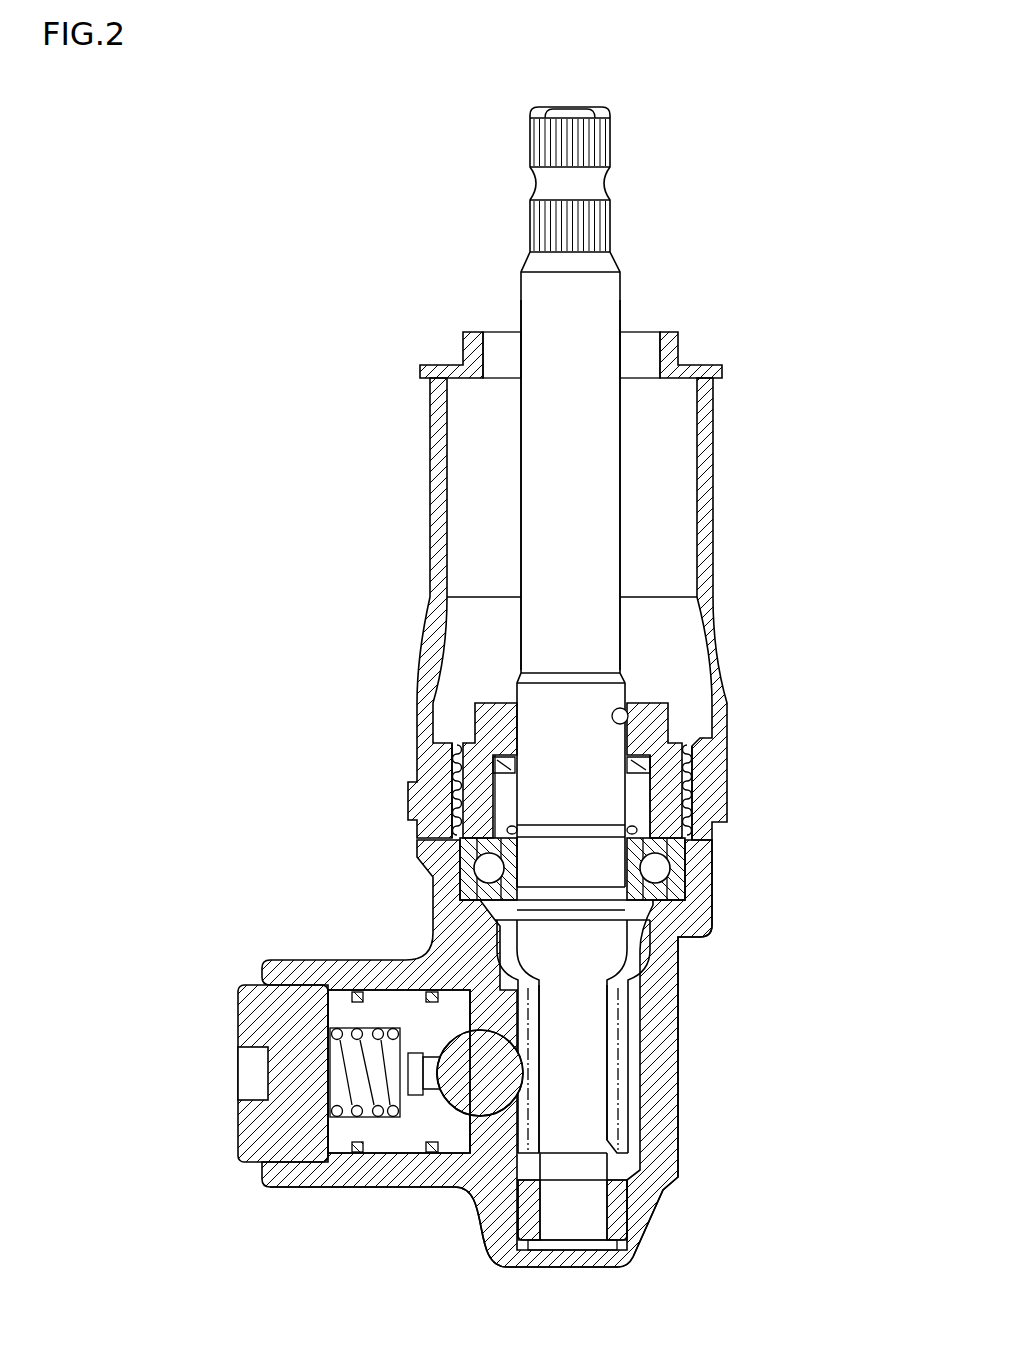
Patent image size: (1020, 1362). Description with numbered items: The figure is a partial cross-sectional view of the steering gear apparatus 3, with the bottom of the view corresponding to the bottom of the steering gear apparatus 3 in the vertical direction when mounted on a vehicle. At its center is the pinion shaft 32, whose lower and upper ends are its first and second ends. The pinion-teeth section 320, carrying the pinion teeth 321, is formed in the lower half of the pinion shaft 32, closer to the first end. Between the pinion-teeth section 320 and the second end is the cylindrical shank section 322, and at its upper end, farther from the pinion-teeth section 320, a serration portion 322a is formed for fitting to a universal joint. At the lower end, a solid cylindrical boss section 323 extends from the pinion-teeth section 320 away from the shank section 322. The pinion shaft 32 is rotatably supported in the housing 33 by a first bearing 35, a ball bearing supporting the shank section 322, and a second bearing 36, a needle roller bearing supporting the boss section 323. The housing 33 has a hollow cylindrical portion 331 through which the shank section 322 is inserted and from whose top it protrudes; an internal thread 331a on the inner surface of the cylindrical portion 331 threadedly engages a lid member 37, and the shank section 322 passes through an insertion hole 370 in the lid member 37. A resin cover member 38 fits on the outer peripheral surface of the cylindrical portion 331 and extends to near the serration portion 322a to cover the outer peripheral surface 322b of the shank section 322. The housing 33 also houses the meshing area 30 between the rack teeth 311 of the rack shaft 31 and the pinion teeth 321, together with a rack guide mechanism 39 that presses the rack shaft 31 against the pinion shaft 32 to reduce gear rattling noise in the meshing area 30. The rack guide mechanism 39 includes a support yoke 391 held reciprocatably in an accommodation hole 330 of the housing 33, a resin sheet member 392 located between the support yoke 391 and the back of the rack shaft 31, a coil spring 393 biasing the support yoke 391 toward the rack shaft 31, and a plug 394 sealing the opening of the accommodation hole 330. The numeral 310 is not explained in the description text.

The steering gear apparatus 3 is at (733, 172).
The meshing area 30 is at (518, 1130).
The rack shaft 31 is at (465, 1040).
The socket cavity 310 is at (550, 1107).
The rack teeth 311 is at (525, 1088).
The pinion shaft 32 is at (522, 293).
The pinion-teeth section 320 is at (640, 1005).
The pinion teeth 321 is at (620, 1057).
The shank section 322 is at (603, 444).
The serration portion 322a is at (612, 215).
The outer peripheral surface 322b is at (622, 487).
The boss section 323 is at (587, 1208).
The housing 33 is at (715, 908).
The accommodation hole 330 is at (388, 993).
The cylindrical portion 331 is at (702, 808).
The internal thread 331a is at (692, 772).
The first bearing 35 is at (673, 878).
The second bearing 36 is at (613, 1203).
The lid member 37 is at (652, 728).
The insertion hole 370 is at (626, 703).
The cover member 38 is at (437, 643).
The rack guide mechanism 39 is at (248, 1181).
The support yoke 391 is at (360, 1147).
The sheet member 392 is at (437, 1103).
The coil spring 393 is at (335, 1093).
The plug 394 is at (255, 1015).